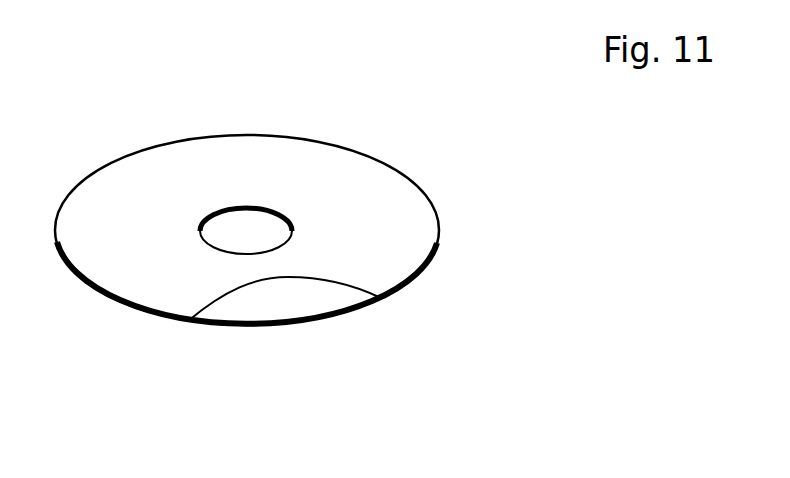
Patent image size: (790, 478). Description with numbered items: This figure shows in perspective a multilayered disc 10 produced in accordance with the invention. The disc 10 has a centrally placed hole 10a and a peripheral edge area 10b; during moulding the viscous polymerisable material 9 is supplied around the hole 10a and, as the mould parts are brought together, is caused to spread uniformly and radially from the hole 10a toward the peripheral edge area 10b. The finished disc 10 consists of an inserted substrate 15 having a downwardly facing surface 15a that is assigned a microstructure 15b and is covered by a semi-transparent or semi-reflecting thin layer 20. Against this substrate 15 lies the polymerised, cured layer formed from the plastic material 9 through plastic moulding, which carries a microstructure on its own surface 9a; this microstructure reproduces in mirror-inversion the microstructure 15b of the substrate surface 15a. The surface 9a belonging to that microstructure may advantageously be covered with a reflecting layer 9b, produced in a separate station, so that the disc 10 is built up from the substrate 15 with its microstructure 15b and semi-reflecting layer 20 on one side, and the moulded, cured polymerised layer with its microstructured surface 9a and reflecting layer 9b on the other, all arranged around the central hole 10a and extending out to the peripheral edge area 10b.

The multilayered disc 10 is at (405, 167).
The centrally placed hole 10a is at (258, 208).
The peripheral edge area 10b is at (432, 202).
The substrate 15 is at (153, 237).
The surface 15a is at (207, 310).
The microstructure 15b is at (227, 325).
The viscous polymerisable material 9 is at (290, 305).
The surface 9a is at (370, 297).
The notch side 9b is at (377, 303).
The semi-reflecting layer 20 is at (347, 300).